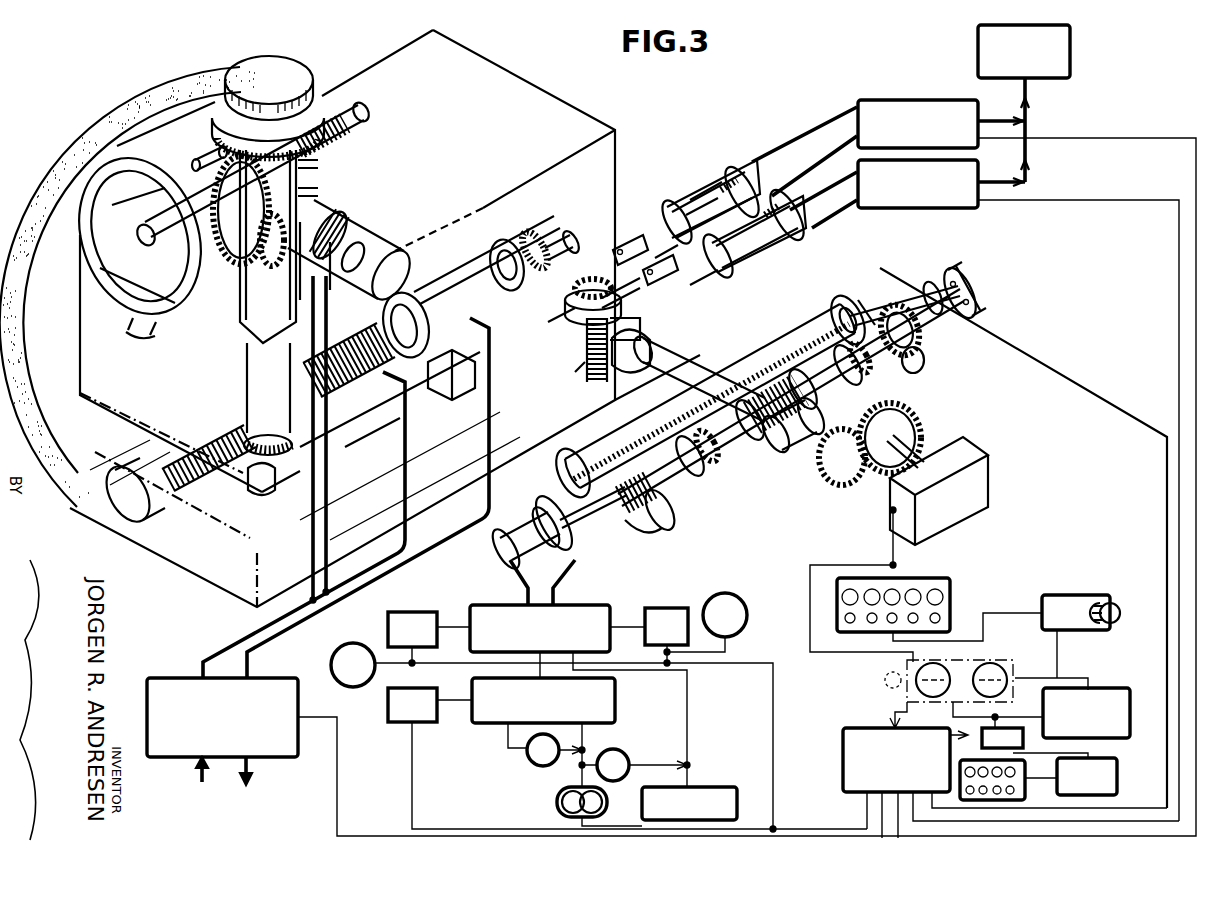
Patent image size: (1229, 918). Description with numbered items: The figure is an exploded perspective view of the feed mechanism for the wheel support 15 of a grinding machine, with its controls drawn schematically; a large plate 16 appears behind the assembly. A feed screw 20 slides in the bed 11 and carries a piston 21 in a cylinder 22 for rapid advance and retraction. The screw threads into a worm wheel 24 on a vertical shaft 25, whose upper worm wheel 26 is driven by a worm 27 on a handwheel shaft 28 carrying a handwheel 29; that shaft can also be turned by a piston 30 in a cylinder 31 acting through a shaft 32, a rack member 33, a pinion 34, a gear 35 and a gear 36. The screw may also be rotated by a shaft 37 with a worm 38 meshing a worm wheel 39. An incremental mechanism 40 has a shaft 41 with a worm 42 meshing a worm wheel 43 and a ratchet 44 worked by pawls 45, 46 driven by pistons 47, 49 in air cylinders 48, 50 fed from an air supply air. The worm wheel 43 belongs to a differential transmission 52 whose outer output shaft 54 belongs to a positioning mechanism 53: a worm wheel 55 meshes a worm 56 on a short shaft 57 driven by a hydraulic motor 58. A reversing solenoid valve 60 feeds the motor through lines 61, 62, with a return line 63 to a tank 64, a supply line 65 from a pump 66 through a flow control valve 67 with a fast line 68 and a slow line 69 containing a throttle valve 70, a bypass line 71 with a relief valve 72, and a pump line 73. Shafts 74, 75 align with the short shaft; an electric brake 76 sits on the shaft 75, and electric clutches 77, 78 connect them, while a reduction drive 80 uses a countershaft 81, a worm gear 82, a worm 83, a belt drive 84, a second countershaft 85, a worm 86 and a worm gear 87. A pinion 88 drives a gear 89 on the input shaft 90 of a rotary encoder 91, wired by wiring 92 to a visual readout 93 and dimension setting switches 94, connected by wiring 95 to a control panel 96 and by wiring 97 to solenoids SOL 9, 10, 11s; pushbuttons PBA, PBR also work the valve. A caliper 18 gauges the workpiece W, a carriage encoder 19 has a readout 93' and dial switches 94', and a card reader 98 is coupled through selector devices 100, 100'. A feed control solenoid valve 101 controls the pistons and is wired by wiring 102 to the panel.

The bed 11 is at (188, 572).
The wheel support 15 is at (522, 92).
The circular plate 16 is at (148, 112).
The caliper 18 is at (1052, 596).
The encoder 19 is at (1110, 776).
The feed screw 20 is at (350, 377).
The piston 21 is at (445, 297).
The cylinder 22 is at (480, 322).
The worm wheel 24 is at (250, 475).
The vertical shaft 25 is at (220, 427).
The worm wheel 26 is at (321, 92).
The worm 27 is at (345, 132).
The handwheel shaft 28 is at (210, 246).
The handwheel 29 is at (153, 322).
The piston 30 is at (342, 238).
The cylinder 31 is at (393, 240).
The shaft 32 is at (318, 192).
The rack member 33 is at (318, 164).
The pinion 34 is at (268, 250).
The gear 35 is at (268, 302).
The gear 36 is at (218, 160).
The shaft 37 is at (555, 330).
The worm 38 is at (560, 295).
The worm wheel 39 is at (522, 235).
The incremental feed mechanism 40 is at (715, 266).
The shaft 41 is at (571, 363).
The worm 42 is at (590, 372).
The worm wheel 43 is at (645, 322).
The ratchet 44 is at (583, 270).
The pawl 45 is at (622, 248).
The pawl 46 is at (640, 295).
The piston 47 is at (708, 192).
The cylinder 48 is at (745, 180).
The piston 49 is at (775, 250).
The cylinder 50 is at (795, 228).
The differential transmission 52 is at (627, 357).
The positioning mechanism 53 is at (784, 322).
The shaft 54 is at (688, 365).
The worm wheel 55 is at (768, 440).
The worm 56 is at (810, 410).
The short shaft 57 is at (725, 455).
The hydraulic motor 58 is at (512, 528).
The reversing solenoid valve 60 is at (600, 605).
The hydraulic line 61 is at (495, 573).
The hydraulic line 62 is at (548, 577).
The return line 63 is at (687, 702).
The fluid supply tank 64 is at (720, 788).
The supply line 65 is at (478, 690).
The pump 66 is at (556, 800).
The flow control valve 67 is at (615, 695).
The line 68 is at (588, 742).
The line 69 is at (500, 748).
The throttle valve 70 is at (530, 758).
The bypass line 71 is at (655, 765).
The relief valve 72 is at (620, 780).
The line 73 is at (568, 818).
The shaft 74 is at (620, 520).
The shaft 75 is at (948, 315).
The electric brake 76 is at (978, 288).
The electric clutch 77 is at (705, 472).
The electric clutch 78 is at (858, 378).
The reduction drive 80 is at (871, 286).
The countershaft 81 is at (588, 475).
The worm gear 82 is at (640, 538).
The worm 83 is at (666, 508).
The sprocket and belt-type drive 84 is at (842, 300).
The second countershaft 85 is at (875, 322).
The worm 86 is at (924, 366).
The worm gear 87 is at (925, 290).
The pinion 88 is at (835, 480).
The gear 89 is at (922, 418).
The input shaft 90 is at (925, 448).
The rotary encoder 91 is at (982, 476).
The wiring 92 is at (888, 545).
The visual readout 93 is at (903, 587).
The dimension setting switches 94 is at (967, 605).
The wiring 95 is at (895, 712).
The control panel 96 is at (844, 748).
The wiring 97 is at (793, 829).
The card reader 98 is at (1115, 690).
The selector device 100 is at (986, 679).
The selector device 100' is at (1018, 720).
The readout 93' is at (1017, 764).
The dial switches 94' is at (1035, 792).
The feed control solenoid valve 101 is at (288, 762).
The wiring 102 is at (337, 798).
The workpiece W is at (1120, 606).
The solenoid SOL 9 is at (430, 705).
The solenoid SOL 10 is at (429, 639).
The solenoid SOL 11 11s is at (649, 637).
The pushbutton switch PBA is at (552, 736).
The pushbutton switch PBR is at (707, 622).
The air supply air is at (747, 430).